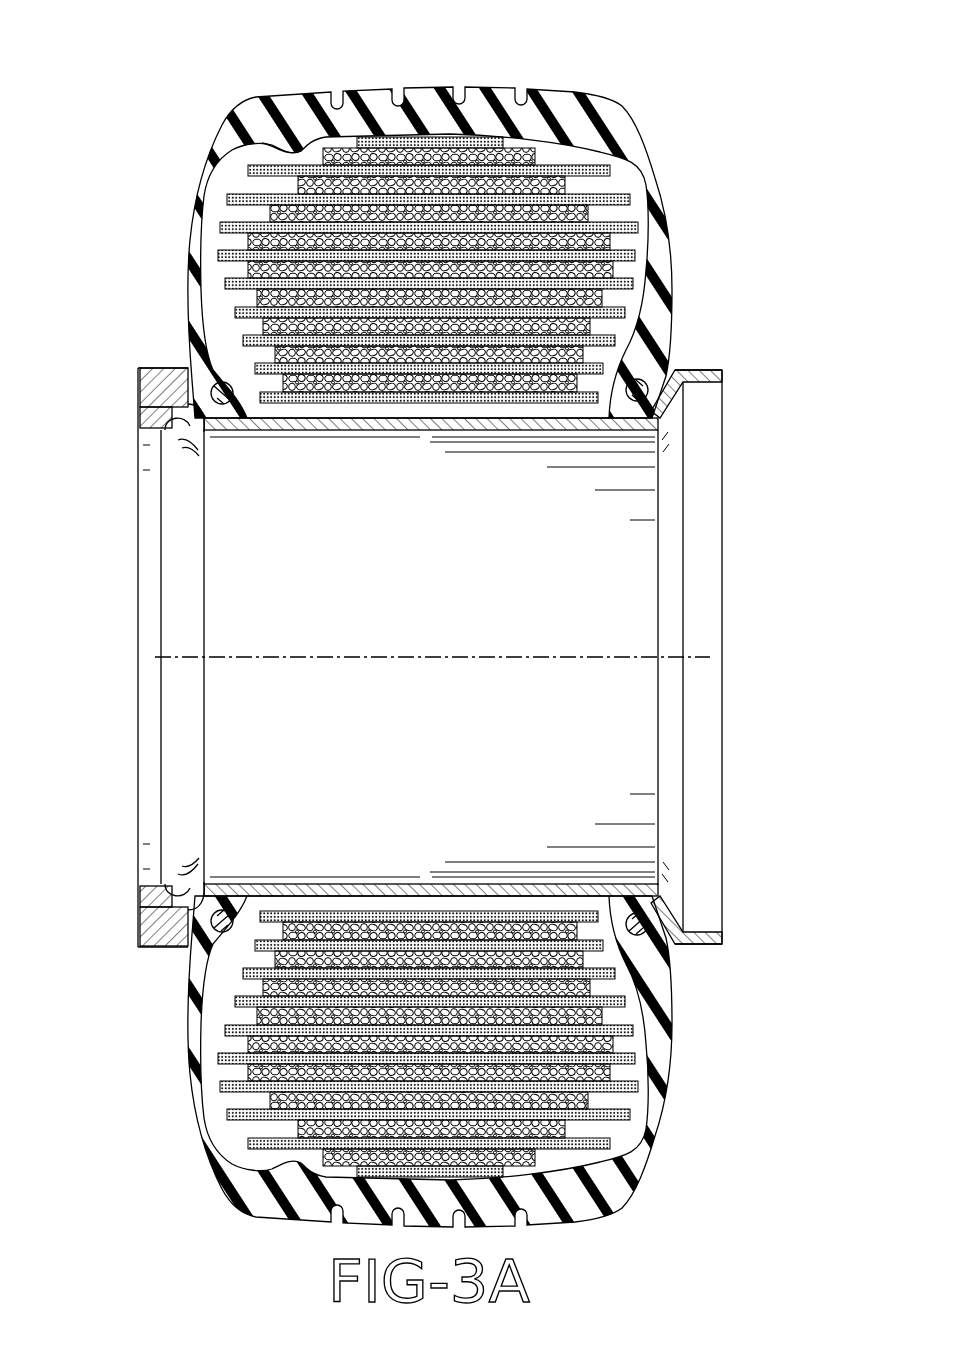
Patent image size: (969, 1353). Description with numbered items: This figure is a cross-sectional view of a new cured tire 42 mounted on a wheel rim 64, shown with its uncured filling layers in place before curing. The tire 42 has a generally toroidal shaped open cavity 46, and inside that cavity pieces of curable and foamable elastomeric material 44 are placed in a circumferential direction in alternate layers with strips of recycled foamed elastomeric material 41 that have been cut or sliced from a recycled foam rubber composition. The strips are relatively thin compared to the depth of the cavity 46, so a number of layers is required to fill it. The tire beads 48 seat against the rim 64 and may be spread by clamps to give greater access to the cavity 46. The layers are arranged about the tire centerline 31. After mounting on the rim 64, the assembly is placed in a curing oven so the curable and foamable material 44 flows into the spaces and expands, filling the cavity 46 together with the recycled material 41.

The centerline 31 is at (412, 657).
The recycled foamed elastomeric material 41 is at (336, 153).
The new tire 42 is at (256, 92).
The curable and foamable elastomeric material 44 is at (428, 139).
The open cavity 46 is at (303, 143).
The beads 48 is at (646, 389).
The wheel rim 64 is at (148, 392).